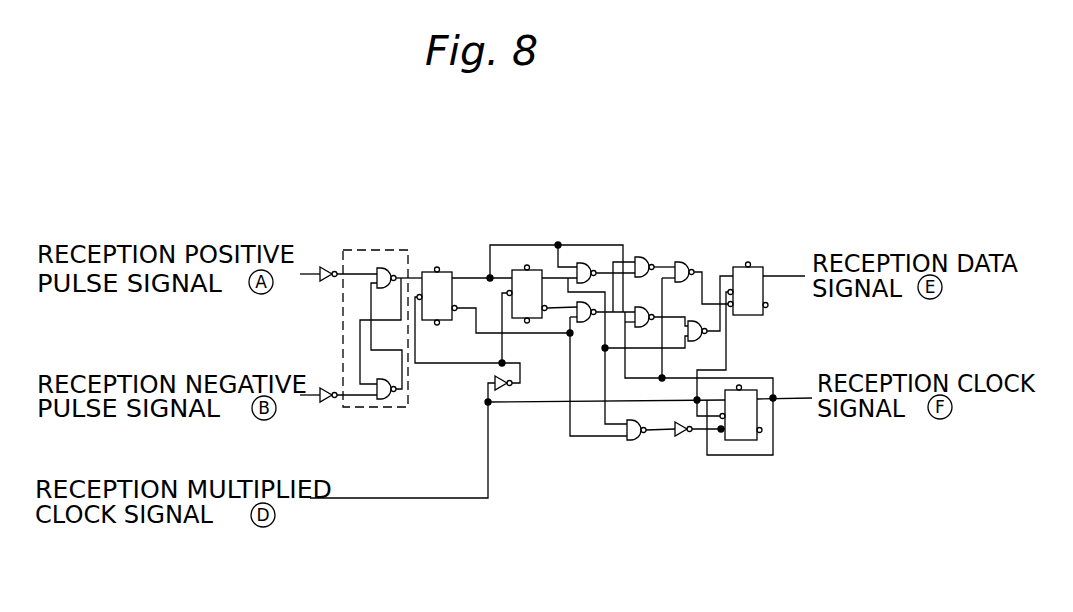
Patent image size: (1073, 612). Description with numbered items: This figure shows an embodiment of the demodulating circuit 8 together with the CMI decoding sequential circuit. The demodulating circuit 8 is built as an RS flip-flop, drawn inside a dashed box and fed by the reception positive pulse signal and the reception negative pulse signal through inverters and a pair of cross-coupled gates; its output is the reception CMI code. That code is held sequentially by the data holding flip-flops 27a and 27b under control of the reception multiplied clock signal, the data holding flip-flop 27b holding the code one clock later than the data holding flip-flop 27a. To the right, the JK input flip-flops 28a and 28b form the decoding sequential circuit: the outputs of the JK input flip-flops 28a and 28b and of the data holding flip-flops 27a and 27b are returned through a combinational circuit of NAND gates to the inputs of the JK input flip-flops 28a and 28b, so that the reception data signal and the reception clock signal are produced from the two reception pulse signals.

The demodulating circuit 8 is at (375, 249).
The data holding flip-flop 27a is at (445, 266).
The data holding flip-flop 27b is at (533, 266).
The JK input flip-flop 28a is at (753, 265).
The JK input flip-flop 28b is at (742, 386).